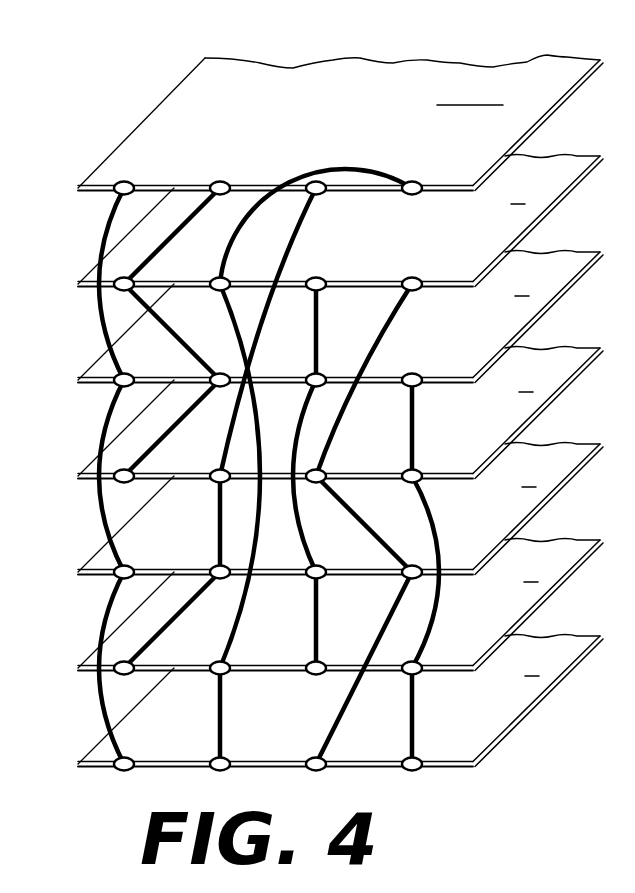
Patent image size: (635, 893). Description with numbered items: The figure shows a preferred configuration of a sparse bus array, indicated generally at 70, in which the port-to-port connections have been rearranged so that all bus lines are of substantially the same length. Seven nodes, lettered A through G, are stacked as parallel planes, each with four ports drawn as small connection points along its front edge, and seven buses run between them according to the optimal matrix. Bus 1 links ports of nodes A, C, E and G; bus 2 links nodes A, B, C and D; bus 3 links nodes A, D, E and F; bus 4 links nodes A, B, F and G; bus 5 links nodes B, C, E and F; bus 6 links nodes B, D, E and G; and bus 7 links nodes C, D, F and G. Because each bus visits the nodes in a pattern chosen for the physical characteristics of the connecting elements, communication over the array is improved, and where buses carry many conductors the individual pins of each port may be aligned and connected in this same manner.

The multi-node bus interconnection structure 70 is at (158, 74).
The bus 1 is at (102, 246).
The bus 2 is at (187, 224).
The bus 3 is at (289, 247).
The bus 4 is at (345, 168).
The bus 5 is at (322, 343).
The bus 6 is at (389, 343).
The bus 7 is at (415, 423).